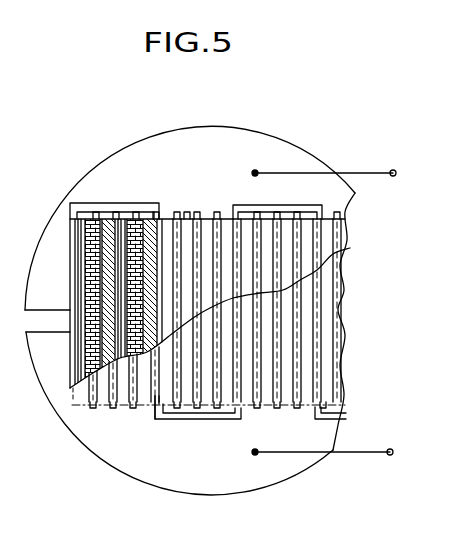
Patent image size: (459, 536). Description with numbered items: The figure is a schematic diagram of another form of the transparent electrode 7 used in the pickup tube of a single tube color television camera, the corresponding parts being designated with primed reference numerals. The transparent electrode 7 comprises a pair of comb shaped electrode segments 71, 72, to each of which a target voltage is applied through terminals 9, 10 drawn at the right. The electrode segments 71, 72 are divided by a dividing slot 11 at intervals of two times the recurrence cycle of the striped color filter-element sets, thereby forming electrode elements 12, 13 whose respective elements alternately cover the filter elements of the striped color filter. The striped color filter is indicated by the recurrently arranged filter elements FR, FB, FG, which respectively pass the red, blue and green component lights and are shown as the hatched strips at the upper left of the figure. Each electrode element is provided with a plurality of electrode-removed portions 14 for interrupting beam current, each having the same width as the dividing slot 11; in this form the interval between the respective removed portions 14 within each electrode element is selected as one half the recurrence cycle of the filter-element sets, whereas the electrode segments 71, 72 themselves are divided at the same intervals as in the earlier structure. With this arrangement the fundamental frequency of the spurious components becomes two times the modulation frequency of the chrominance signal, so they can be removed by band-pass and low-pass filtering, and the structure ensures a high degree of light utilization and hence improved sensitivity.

The transparent electrode 7 is at (303, 484).
The terminal conductor 9 is at (424, 160).
The terminal conductor 10 is at (431, 441).
The dividing slot 11 is at (302, 180).
The electrode element 12 is at (212, 178).
The electrode element 13 is at (103, 408).
The electrode-removed portion 14 is at (177, 396).
The comb shaped electrode segment 71 is at (119, 127).
The comb shaped electrode segment 72 is at (129, 466).
The filter element FR is at (122, 219).
The filter element FB is at (139, 219).
The filter element FG is at (148, 219).